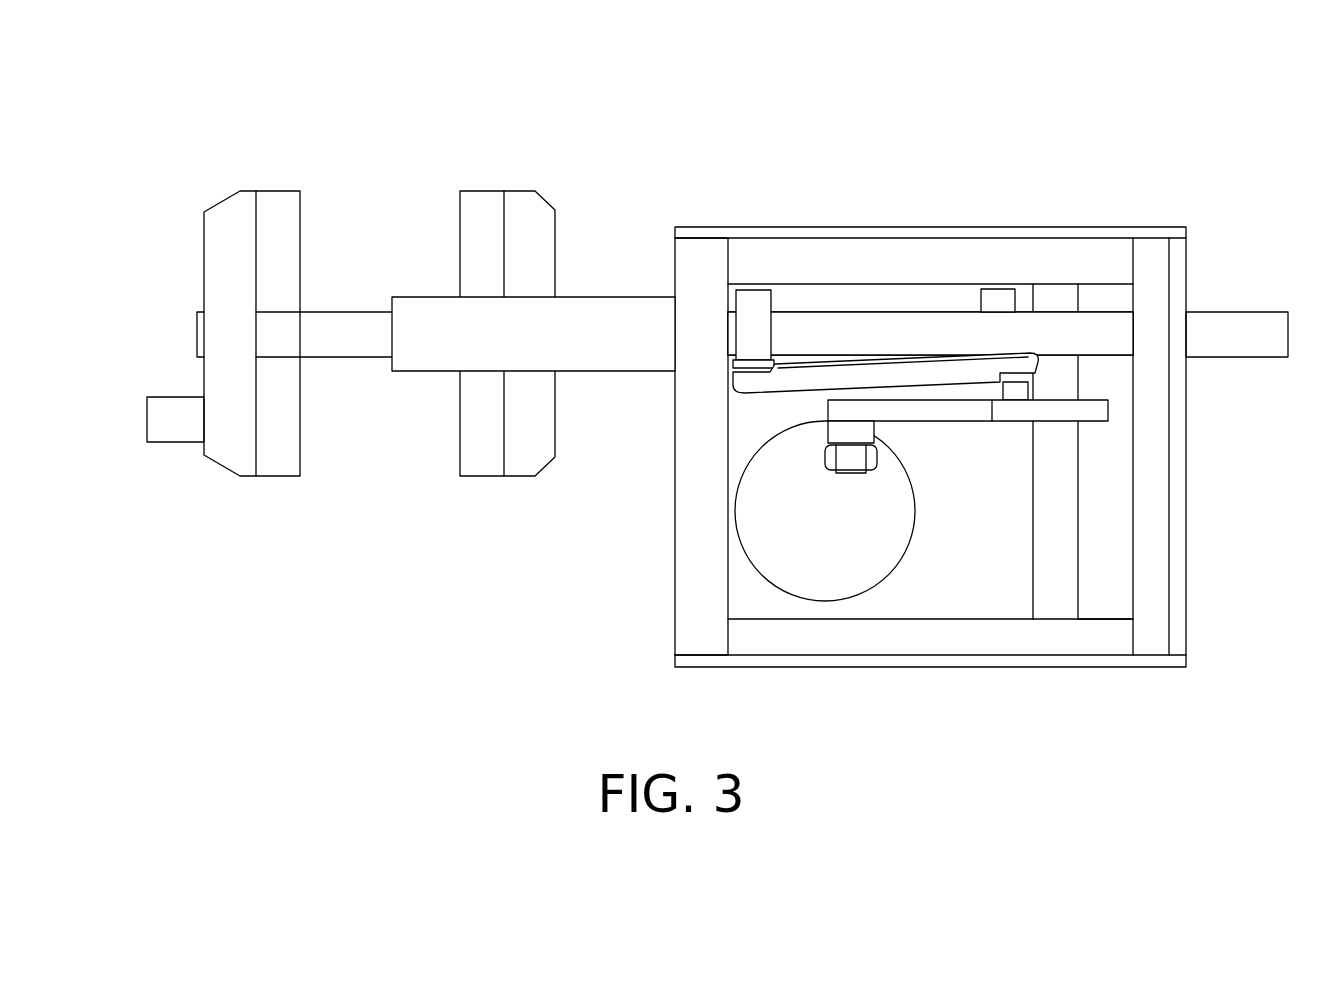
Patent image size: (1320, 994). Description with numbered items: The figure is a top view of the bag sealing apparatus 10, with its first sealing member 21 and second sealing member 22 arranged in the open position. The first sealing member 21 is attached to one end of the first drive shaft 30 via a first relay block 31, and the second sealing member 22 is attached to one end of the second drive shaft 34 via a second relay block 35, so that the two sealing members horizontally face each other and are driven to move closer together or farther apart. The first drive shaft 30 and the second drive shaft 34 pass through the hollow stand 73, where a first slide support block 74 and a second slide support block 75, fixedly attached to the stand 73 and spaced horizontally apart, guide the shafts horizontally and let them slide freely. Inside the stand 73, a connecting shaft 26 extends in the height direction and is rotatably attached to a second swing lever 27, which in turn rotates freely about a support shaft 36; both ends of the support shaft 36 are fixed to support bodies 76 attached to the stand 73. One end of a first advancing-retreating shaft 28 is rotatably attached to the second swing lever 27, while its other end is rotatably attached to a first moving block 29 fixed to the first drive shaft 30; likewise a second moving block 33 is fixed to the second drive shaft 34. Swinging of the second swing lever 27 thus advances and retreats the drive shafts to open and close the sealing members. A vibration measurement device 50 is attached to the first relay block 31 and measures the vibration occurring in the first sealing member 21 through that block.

The bag sealing apparatus 10 is at (1167, 118).
The first sealing member 21 is at (278, 470).
The second sealing member 22 is at (478, 472).
The connecting shaft 26 is at (862, 473).
The second swing lever 27 is at (965, 410).
The first advancing-retreating shaft 28 is at (810, 380).
The first moving block 29 is at (755, 303).
The first drive shaft 30 is at (337, 330).
The first relay block 31 is at (218, 214).
The second moving block 33 is at (998, 300).
The second drive shaft 34 is at (615, 380).
The second relay block 35 is at (537, 458).
The support shaft 36 is at (1056, 605).
The vibration measurement device 50 is at (161, 410).
The stand 73 is at (1060, 234).
The first slide support block 74 is at (681, 278).
The second slide support block 75 is at (1153, 292).
The support bodies 76 is at (1108, 252).